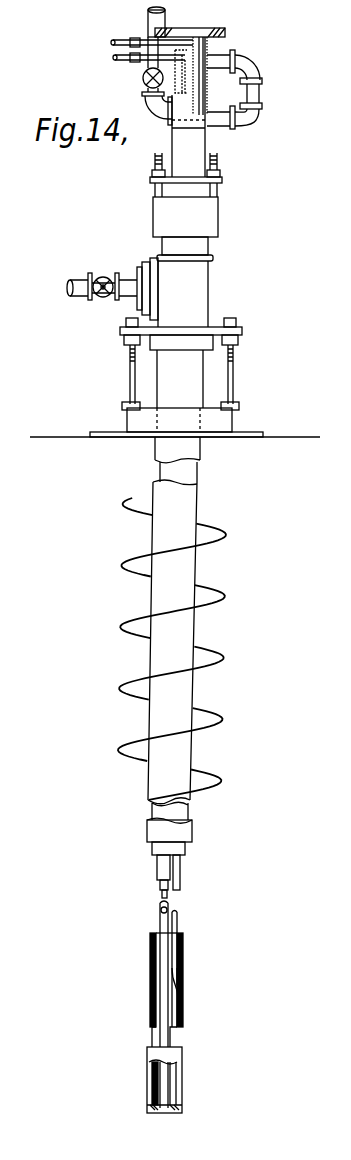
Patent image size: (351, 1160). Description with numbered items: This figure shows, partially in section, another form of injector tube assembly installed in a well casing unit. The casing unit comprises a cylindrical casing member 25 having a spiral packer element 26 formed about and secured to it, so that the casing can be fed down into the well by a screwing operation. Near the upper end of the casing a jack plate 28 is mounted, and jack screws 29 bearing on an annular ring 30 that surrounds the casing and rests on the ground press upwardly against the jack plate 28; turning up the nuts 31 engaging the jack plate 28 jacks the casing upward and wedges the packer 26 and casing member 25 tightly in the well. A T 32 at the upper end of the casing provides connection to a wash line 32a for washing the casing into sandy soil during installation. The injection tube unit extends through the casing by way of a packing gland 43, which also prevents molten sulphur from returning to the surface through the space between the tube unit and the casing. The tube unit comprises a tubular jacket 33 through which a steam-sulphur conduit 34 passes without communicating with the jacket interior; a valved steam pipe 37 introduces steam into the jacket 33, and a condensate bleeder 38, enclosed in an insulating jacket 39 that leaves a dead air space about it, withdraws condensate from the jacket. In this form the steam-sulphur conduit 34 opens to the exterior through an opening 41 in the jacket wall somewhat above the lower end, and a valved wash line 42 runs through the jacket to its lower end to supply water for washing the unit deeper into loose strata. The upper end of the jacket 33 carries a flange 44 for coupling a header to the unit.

The cylindrical casing member 25 is at (199, 503).
The spiral packer element 26 is at (222, 661).
The jack plate 28 is at (218, 331).
The jack screws 29 is at (128, 378).
The annular ring 30 is at (235, 426).
The nuts 31 is at (122, 337).
The T 32 is at (203, 293).
The wash line 32a is at (82, 277).
The tubular jacket 33 is at (205, 147).
The steam-sulphur conduit 34 is at (201, 90).
The valved steam pipe 37 is at (257, 93).
The condensate bleeder 38 is at (140, 60).
The insulating jacket 39 is at (150, 103).
The opening 41 is at (183, 992).
The wash line 42 is at (140, 40).
The packing gland 43 is at (205, 217).
The flange 44 is at (225, 34).